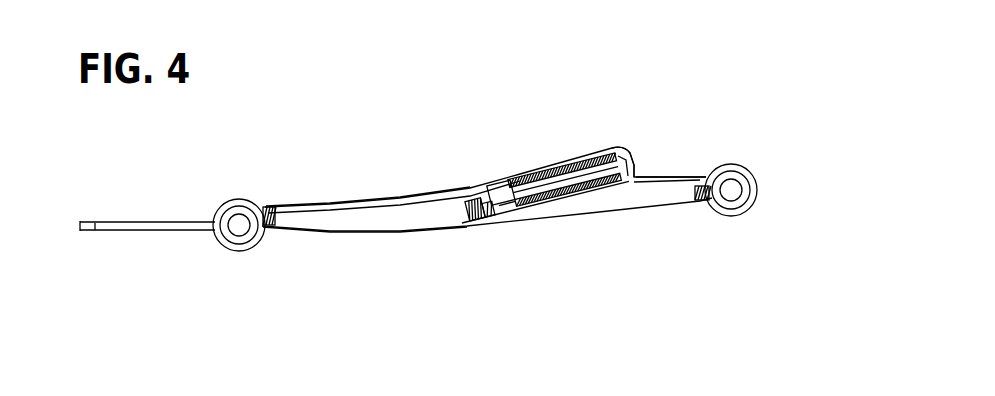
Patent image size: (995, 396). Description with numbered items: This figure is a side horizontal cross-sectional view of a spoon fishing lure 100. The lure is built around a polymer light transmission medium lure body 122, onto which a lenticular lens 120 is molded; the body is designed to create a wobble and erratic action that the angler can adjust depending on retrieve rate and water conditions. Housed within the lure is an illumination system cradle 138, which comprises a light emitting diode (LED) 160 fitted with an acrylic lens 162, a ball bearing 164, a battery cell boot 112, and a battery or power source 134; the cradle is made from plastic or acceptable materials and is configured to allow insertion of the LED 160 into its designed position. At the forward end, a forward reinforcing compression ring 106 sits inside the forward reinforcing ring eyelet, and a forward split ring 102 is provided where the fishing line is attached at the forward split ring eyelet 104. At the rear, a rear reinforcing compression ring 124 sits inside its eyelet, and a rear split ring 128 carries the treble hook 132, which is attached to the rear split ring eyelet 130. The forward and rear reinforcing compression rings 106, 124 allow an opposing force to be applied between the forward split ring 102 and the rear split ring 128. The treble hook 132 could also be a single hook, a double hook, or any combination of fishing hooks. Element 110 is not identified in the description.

The spoon fishing lure 100 is at (426, 176).
The forward split ring 102 is at (752, 205).
The forward split ring eyelet 104 is at (735, 175).
The forward reinforcing compression ring 106 is at (698, 201).
The arm portion 110 is at (670, 177).
The battery cell boot 112 is at (623, 157).
The lenticular lens 120 is at (402, 220).
The polymer light transmission medium lure body 122 is at (390, 202).
The rear reinforcing compression ring 124 is at (270, 210).
The rear split ring 128 is at (252, 243).
The rear split ring eyelet 130 is at (240, 238).
The treble hook 132 is at (95, 231).
The battery or power source 134 is at (557, 183).
The illumination system cradle 138 is at (573, 198).
The light emitting diode (LED) 160 is at (489, 212).
The acrylic lens 162 is at (467, 217).
The ball bearing 164 is at (495, 185).